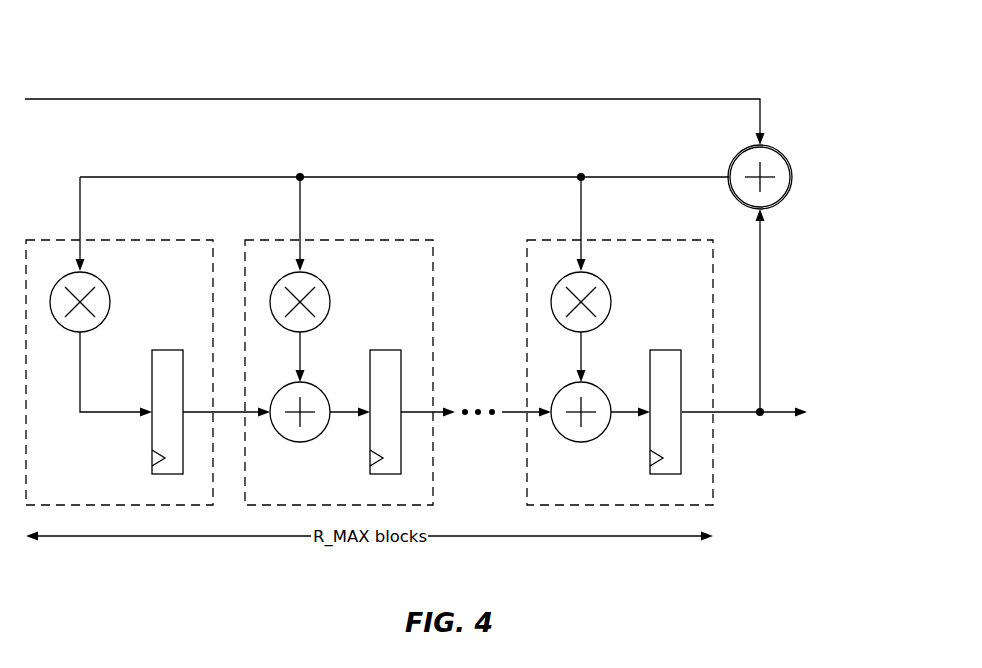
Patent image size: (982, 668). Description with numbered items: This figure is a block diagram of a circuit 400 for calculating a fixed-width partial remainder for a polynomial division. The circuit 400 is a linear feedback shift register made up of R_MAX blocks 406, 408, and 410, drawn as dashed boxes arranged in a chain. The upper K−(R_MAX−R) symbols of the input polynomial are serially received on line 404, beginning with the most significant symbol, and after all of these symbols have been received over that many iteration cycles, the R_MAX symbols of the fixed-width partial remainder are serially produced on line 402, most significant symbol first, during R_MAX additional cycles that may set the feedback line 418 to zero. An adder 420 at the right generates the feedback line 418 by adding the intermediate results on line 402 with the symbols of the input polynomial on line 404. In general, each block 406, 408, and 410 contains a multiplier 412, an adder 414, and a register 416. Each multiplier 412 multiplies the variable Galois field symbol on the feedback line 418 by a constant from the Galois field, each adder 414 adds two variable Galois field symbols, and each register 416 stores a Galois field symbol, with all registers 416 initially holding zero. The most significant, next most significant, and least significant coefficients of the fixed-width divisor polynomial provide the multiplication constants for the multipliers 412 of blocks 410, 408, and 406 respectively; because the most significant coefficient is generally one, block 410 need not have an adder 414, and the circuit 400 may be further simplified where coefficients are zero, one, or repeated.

The circuit 400 is at (138, 44).
The line 402 is at (778, 409).
The line 404 is at (75, 100).
The block 406 is at (554, 240).
The block 408 is at (274, 240).
The block 410 is at (54, 240).
The multiplier 412 is at (101, 328).
The adder 414 is at (290, 442).
The register 416 is at (150, 432).
The feedback line 418 is at (653, 176).
The adder 420 is at (782, 200).